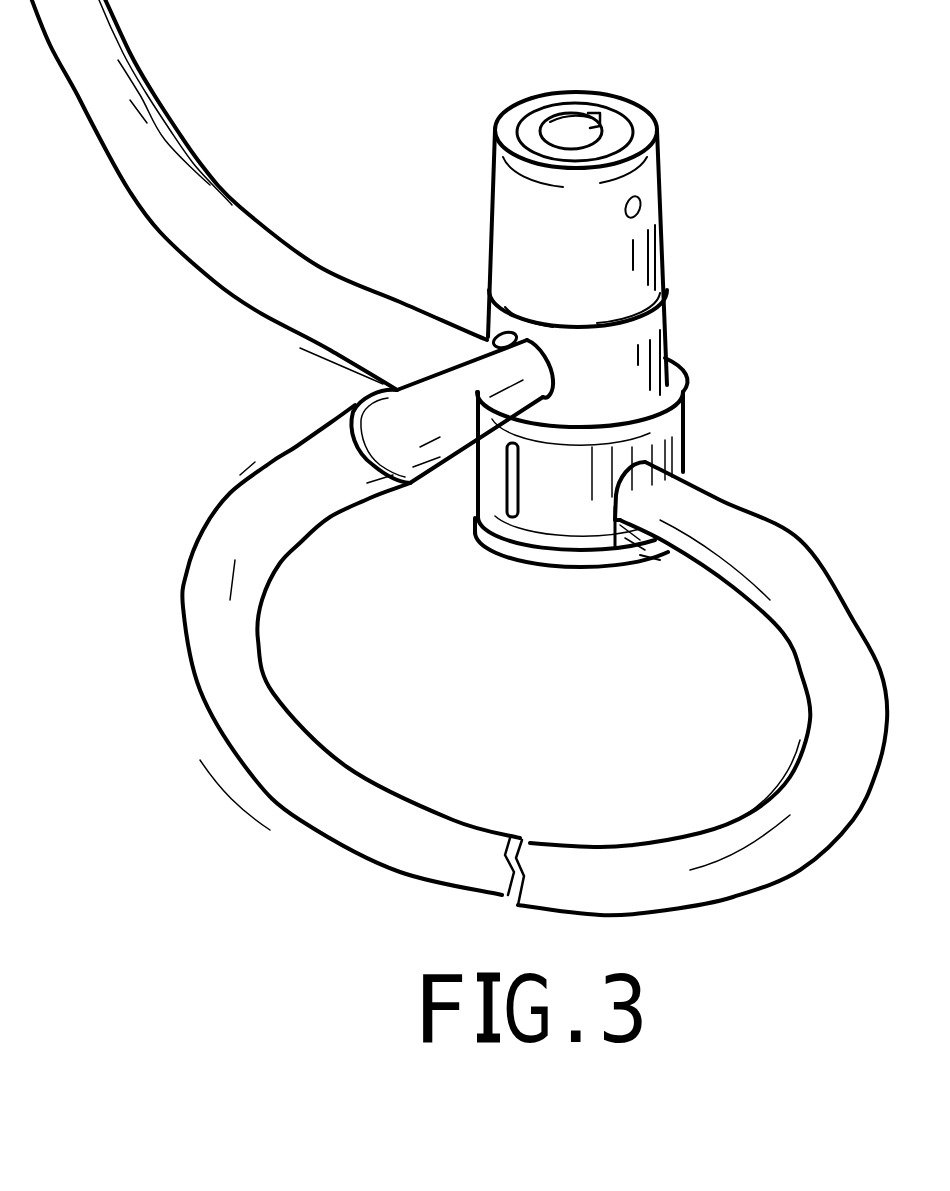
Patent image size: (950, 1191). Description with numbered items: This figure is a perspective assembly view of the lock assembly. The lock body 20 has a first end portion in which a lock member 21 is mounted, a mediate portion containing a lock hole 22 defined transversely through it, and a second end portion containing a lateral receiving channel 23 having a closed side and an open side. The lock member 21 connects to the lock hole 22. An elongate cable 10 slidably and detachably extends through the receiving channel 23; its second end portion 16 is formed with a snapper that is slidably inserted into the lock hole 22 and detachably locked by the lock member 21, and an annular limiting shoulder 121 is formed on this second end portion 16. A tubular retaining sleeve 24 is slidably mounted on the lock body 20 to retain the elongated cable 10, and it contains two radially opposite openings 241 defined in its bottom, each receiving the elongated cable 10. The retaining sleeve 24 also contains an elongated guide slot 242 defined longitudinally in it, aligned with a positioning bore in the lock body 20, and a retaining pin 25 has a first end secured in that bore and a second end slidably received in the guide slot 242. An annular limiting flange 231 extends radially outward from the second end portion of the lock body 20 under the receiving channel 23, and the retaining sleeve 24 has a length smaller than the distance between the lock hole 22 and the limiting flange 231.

The elongate cable 10 is at (192, 252).
The annular limiting shoulder 121 is at (393, 390).
The second end portion 16 is at (443, 363).
The lock body 20 is at (485, 222).
The lock member 21 is at (548, 118).
The lock hole 22 is at (494, 336).
The lateral receiving channel 23 is at (618, 545).
The annular limiting flange 231 is at (650, 548).
The tubular retaining sleeve 24 is at (556, 545).
The openings 241 is at (678, 463).
The elongated guide slot 242 is at (493, 505).
The retaining pin 25 is at (485, 472).